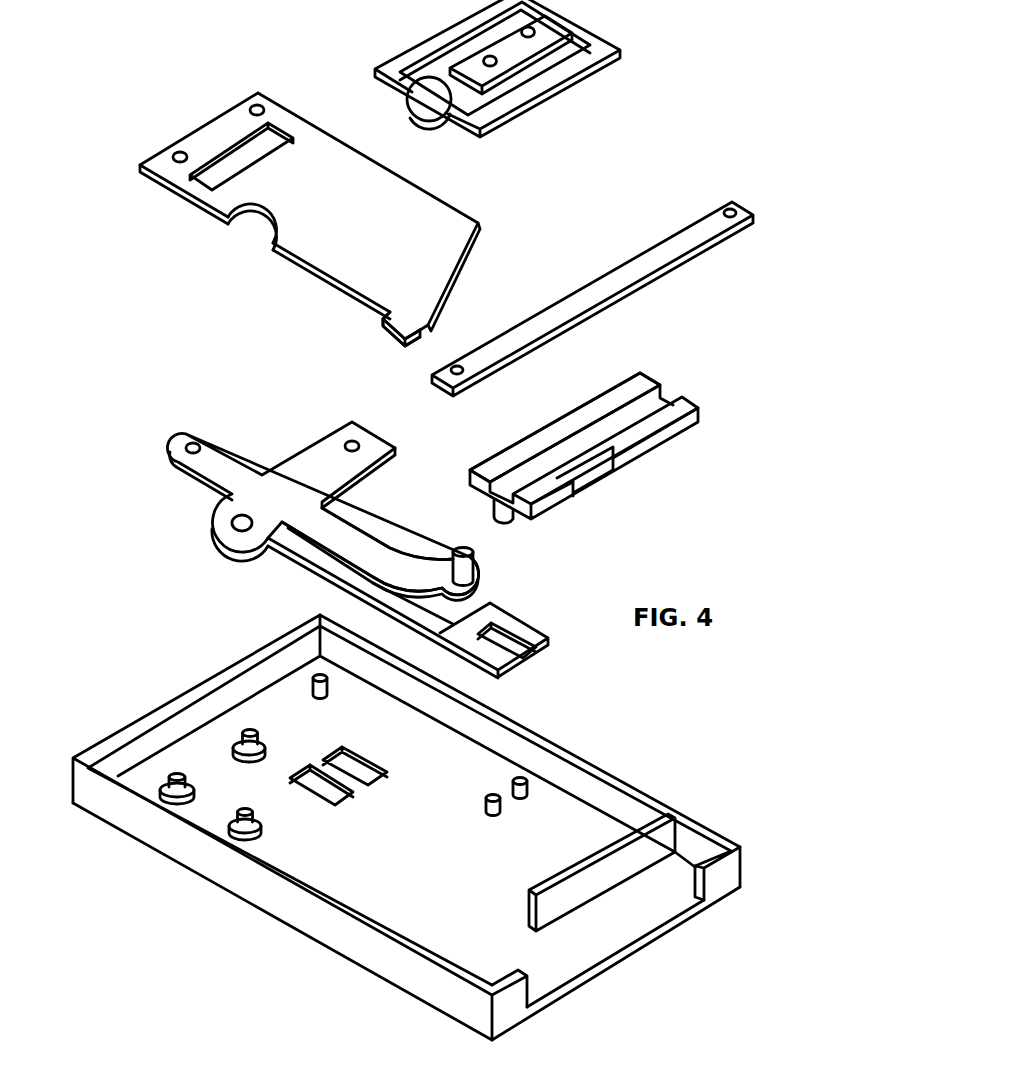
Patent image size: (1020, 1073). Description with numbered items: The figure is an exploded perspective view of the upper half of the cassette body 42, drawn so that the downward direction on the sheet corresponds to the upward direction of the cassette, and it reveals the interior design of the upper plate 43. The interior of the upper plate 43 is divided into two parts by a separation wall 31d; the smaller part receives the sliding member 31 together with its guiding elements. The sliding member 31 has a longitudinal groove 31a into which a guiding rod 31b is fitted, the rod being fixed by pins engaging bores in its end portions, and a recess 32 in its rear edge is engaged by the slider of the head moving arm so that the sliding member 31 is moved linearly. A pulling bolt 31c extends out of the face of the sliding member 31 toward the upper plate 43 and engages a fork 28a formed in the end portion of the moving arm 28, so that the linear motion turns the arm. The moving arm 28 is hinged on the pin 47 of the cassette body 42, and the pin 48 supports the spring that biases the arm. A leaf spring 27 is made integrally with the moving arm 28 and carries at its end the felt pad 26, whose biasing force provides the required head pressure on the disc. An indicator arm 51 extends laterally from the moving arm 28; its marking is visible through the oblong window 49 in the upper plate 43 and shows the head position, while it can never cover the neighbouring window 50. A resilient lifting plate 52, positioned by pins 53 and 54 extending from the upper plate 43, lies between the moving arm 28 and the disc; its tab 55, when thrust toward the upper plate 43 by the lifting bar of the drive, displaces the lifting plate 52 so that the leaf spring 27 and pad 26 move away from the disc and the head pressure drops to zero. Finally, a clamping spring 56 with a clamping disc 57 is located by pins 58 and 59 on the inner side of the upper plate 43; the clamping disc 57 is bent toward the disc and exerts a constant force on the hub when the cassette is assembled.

The clamping spring 56 is at (582, 77).
The clamping disc 57 is at (434, 114).
The lifting plate 52 is at (441, 219).
The tab 55 is at (398, 324).
The guiding rod 31b is at (694, 253).
The longitudinal groove 31a is at (656, 404).
The sliding member 31 is at (673, 431).
The recess 32 is at (588, 471).
The pulling bolt 31c is at (511, 518).
The indicator arm 51 is at (311, 447).
The leaf spring 27 is at (395, 549).
The pad 26 is at (473, 570).
The moving arm 28 is at (297, 563).
The fork 28a is at (523, 654).
The pin 48 is at (313, 689).
The pin 54 is at (234, 746).
The pin 53 is at (163, 788).
The pin 47 is at (230, 822).
The cassette body 42 is at (252, 885).
The upper plate 43 is at (345, 890).
The window 49 is at (336, 801).
The window 50 is at (371, 781).
The pin 58 is at (496, 795).
The pin 59 is at (527, 782).
The separation wall 31d is at (618, 843).